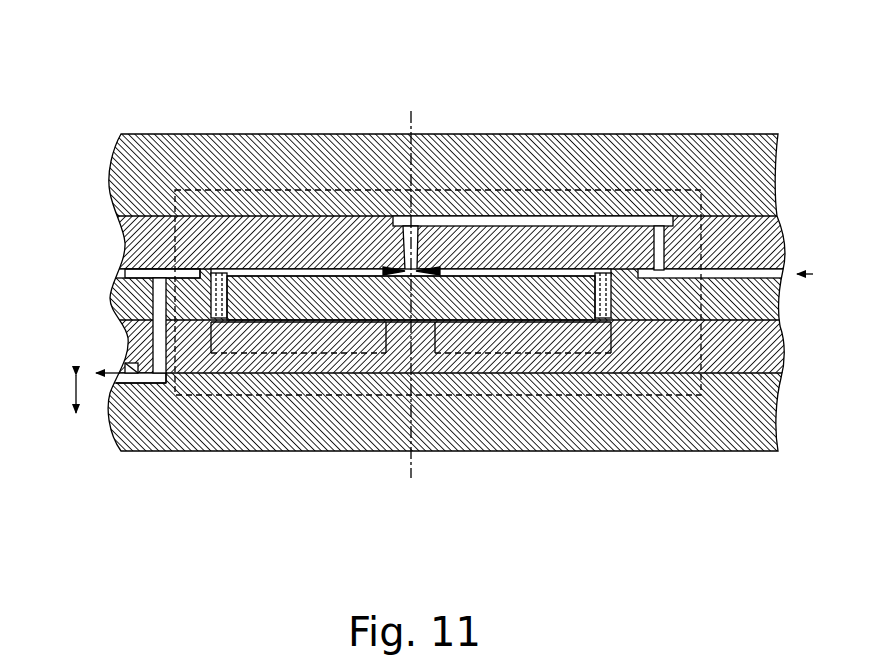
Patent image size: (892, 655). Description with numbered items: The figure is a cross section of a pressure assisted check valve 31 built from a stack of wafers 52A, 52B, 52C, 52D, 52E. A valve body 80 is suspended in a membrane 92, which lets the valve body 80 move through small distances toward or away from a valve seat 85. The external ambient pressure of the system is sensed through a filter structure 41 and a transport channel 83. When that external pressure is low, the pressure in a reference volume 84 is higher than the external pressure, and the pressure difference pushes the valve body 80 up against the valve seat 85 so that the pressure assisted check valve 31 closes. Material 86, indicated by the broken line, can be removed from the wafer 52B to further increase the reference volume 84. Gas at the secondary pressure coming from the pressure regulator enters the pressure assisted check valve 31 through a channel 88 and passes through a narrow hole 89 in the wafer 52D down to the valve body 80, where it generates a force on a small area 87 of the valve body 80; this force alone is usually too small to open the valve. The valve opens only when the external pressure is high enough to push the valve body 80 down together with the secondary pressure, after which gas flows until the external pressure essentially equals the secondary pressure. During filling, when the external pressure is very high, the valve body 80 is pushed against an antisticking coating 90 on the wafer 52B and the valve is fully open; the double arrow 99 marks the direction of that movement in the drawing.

The pressure assisted check valve 31 is at (657, 388).
The filter structure 41 is at (120, 375).
The wafer 52A is at (768, 405).
The wafer 52B is at (777, 340).
The wafer 52C is at (770, 302).
The wafer 52D is at (769, 215).
The wafer 52E is at (768, 160).
The valve body 80 is at (527, 285).
The transport channel 83 is at (120, 265).
The reference volume 84 is at (480, 310).
The valve seat 85 is at (380, 260).
The material 86 is at (222, 300).
The small area 87 is at (420, 218).
The channel 88 is at (627, 210).
The narrow hole 89 is at (397, 258).
The antisticking coating 90 is at (333, 315).
The membrane 92 is at (213, 262).
The stacking direction 99 is at (52, 394).